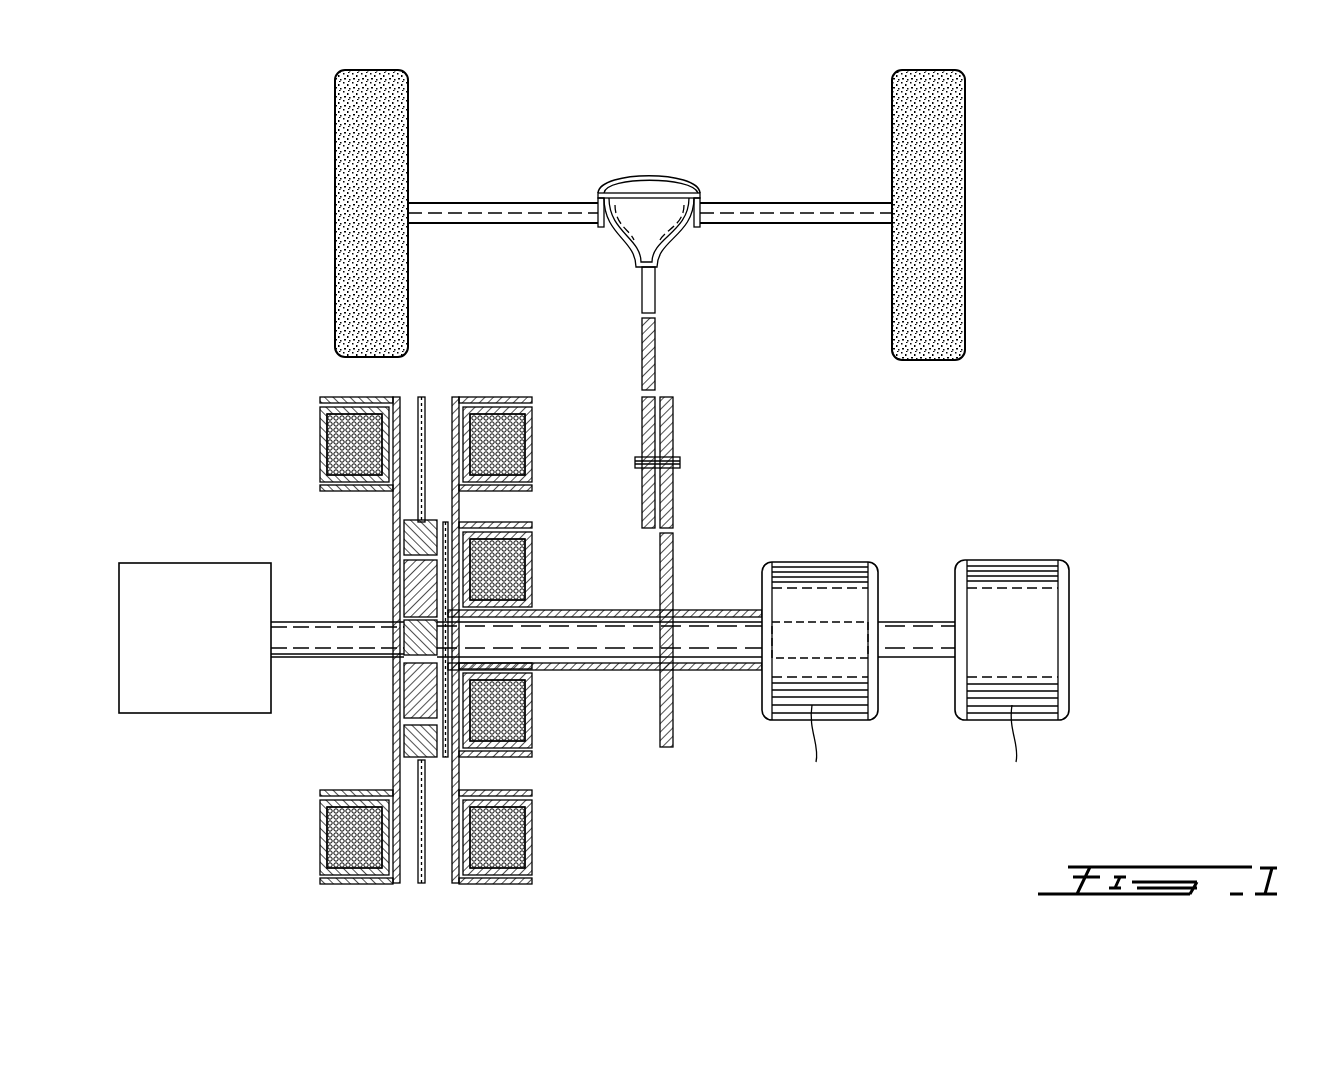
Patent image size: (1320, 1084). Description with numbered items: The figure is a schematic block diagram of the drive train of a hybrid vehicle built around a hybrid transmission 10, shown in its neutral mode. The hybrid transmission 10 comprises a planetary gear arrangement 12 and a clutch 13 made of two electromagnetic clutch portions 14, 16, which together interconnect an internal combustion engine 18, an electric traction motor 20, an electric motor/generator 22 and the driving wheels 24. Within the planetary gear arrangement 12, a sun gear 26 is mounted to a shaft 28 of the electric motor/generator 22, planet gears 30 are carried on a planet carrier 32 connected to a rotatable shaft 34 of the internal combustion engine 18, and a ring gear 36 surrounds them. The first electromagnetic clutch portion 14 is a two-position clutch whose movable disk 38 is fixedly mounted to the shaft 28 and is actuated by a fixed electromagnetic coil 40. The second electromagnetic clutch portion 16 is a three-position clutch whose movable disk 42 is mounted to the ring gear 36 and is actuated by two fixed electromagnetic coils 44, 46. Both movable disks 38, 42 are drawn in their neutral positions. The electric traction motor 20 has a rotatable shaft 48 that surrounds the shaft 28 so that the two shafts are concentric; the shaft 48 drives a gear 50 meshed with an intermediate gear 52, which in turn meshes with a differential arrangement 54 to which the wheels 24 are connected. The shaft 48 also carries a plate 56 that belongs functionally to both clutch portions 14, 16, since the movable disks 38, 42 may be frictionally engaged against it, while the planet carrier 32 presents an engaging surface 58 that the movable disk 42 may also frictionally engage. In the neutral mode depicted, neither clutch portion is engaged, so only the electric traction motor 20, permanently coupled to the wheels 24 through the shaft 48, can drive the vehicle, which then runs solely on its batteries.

The hybrid transmission 10 is at (405, 894).
The planetary gear arrangement 12 is at (405, 769).
The clutch 13 is at (618, 789).
The first electromagnetic clutch portion 14 is at (543, 710).
The second electromagnetic clutch portion 16 is at (540, 847).
The internal combustion engine 18 is at (158, 593).
The electric traction motor 20 is at (830, 583).
The electric motor/generator 22 is at (1010, 583).
The driving wheels 24 is at (358, 118).
The sun gear 26 is at (407, 642).
The shaft 28 is at (914, 635).
The planet gears 30 is at (407, 553).
The planet carrier 32 is at (393, 573).
The rotatable shaft 34 is at (323, 638).
The ring gear 36 is at (423, 520).
The movable disk 38 is at (458, 518).
The fixed electromagnetic coil 40 is at (505, 572).
The movable disk 42 is at (422, 865).
The fixed electromagnetic coil 44 is at (525, 845).
The fixed electromagnetic coil 46 is at (345, 832).
The rotatable shaft 48 is at (718, 610).
The gear 50 is at (673, 546).
The intermediate gear 52 is at (668, 415).
The differential arrangement 54 is at (655, 212).
The plate 56 is at (447, 412).
The engaging surface 58 is at (403, 415).